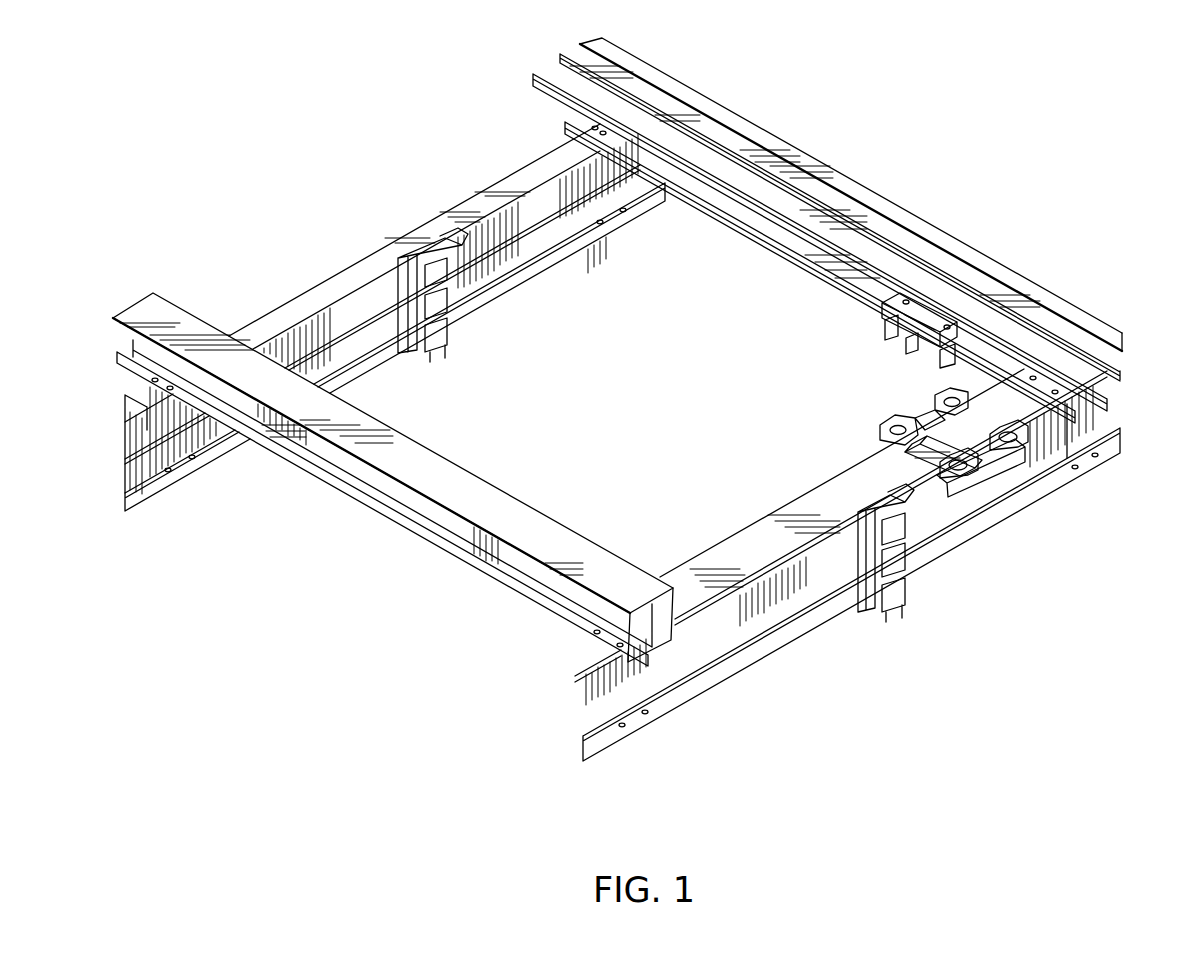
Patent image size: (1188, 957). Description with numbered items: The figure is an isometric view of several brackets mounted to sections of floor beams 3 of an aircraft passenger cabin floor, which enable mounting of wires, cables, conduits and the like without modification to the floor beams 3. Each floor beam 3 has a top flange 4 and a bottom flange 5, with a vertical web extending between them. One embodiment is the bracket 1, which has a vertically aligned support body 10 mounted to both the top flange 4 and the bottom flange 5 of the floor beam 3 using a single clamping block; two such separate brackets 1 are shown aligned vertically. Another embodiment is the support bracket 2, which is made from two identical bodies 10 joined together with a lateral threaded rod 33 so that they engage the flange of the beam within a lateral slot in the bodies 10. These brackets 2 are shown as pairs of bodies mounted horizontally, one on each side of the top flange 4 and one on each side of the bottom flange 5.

The bracket 1 is at (412, 250).
The support bracket 2 is at (875, 319).
The floor beam 3 is at (477, 193).
The top flange 4 is at (720, 565).
The bottom flange 5 is at (767, 240).
The support body 10 is at (940, 400).
The lateral threaded rod 33 is at (905, 455).